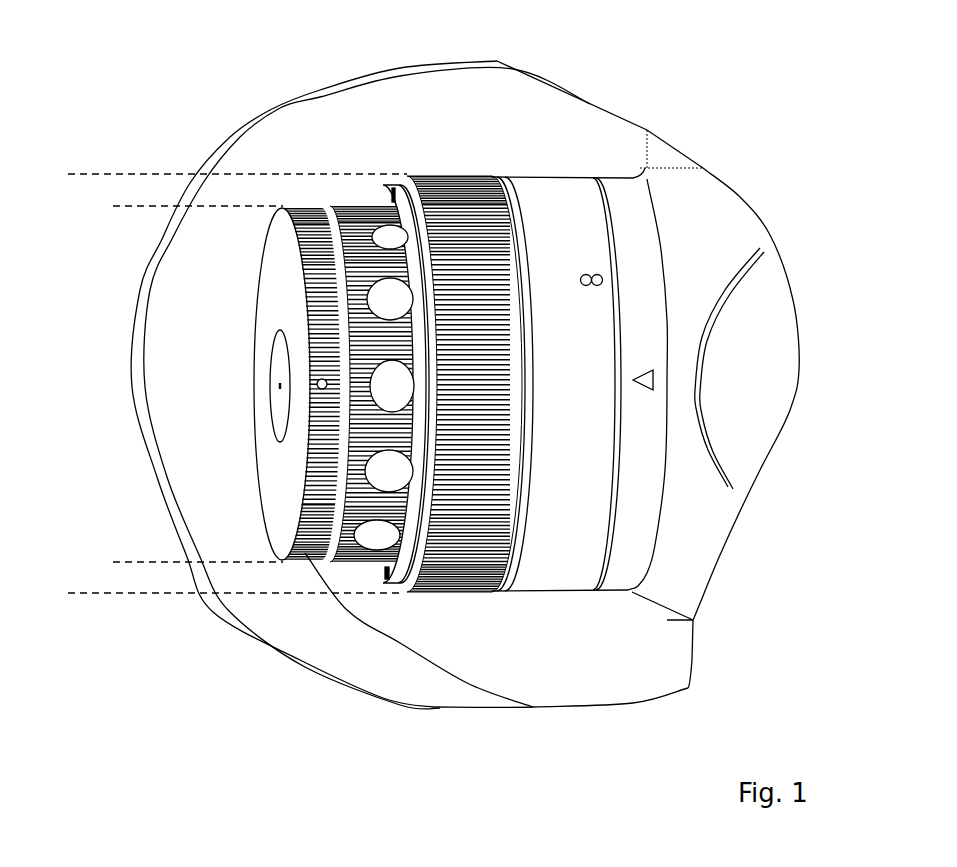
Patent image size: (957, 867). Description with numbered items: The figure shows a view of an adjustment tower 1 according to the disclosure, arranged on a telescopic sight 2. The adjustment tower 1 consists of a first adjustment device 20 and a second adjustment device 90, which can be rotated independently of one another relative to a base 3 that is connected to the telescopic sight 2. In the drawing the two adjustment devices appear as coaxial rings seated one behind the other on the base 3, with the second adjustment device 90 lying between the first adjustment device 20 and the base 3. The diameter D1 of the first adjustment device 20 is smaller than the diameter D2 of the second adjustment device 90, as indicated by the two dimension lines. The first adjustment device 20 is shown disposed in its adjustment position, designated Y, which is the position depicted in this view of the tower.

The adjustment tower 1 is at (765, 112).
The telescopic sight 2 is at (739, 233).
The base 3 is at (627, 590).
The first adjustment device 20 is at (357, 219).
The second adjustment device 90 is at (469, 199).
The diameter of the first adjustment device D1 is at (125, 222).
The diameter of the second adjustment device D2 is at (76, 190).